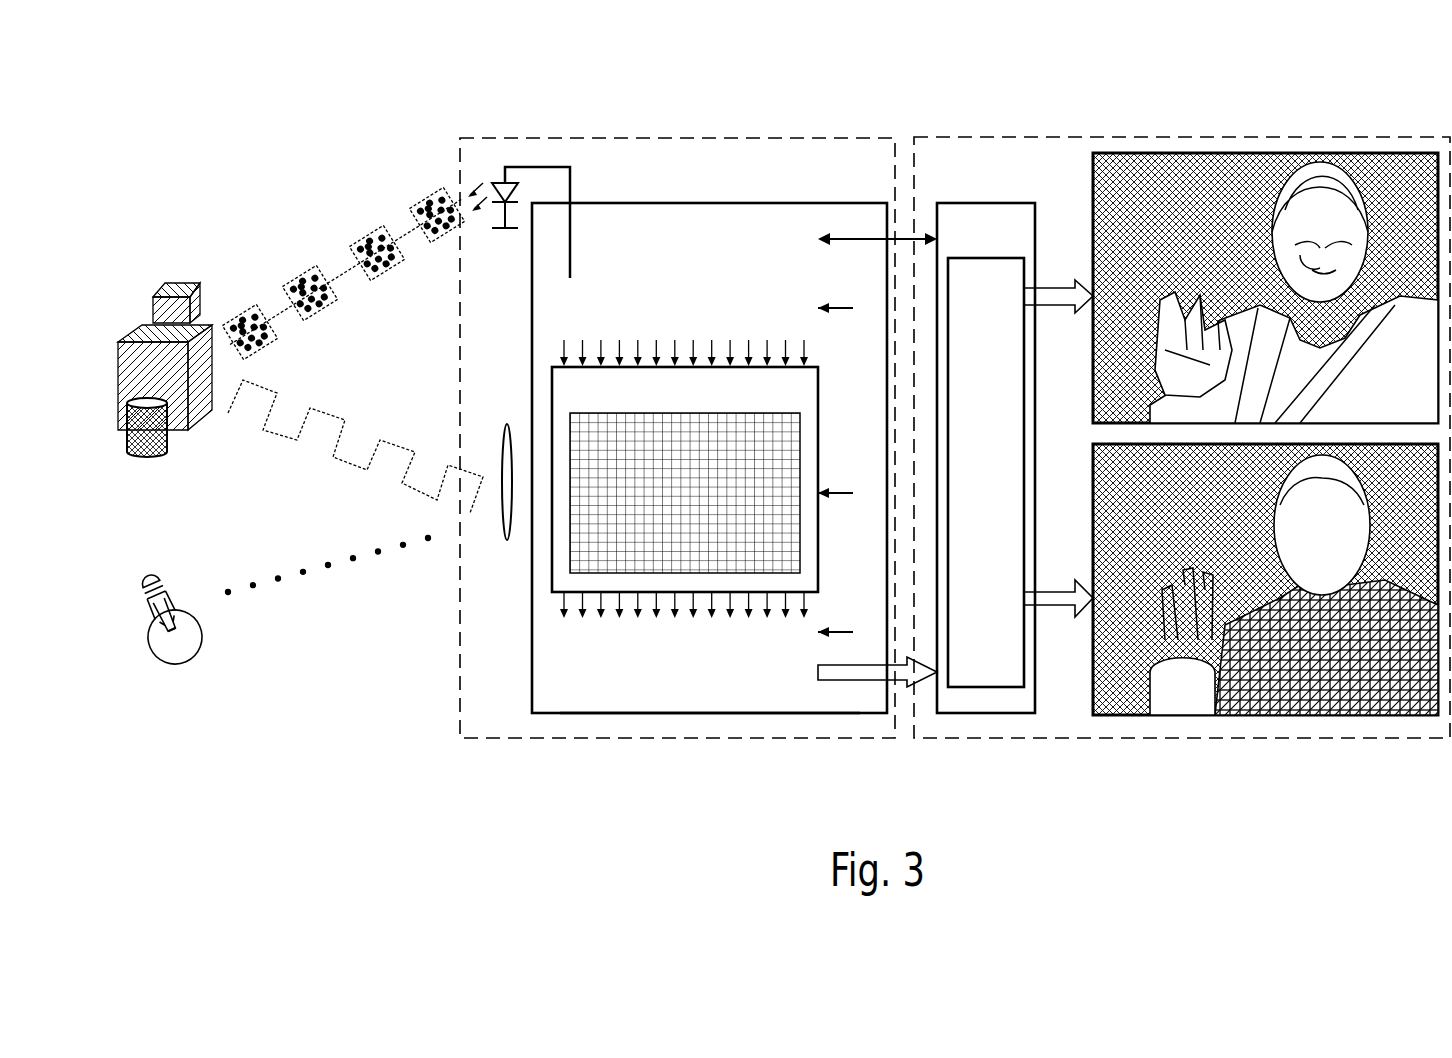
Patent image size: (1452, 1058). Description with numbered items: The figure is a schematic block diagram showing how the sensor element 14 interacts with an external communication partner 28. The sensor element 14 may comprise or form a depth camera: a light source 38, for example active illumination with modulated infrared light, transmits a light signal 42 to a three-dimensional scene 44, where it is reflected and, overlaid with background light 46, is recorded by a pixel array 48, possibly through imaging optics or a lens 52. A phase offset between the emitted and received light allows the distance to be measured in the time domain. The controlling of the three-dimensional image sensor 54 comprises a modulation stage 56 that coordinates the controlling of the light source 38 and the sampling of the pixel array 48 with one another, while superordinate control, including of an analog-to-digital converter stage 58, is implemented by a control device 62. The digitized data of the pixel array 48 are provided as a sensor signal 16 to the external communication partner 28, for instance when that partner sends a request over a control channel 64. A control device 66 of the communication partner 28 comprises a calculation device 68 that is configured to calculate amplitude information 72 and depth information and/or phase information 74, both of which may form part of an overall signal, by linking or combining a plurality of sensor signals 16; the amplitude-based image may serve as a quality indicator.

The sensor element 14 is at (690, 137).
The sensor signal 16 is at (855, 680).
The communication partner 28 is at (1057, 137).
The light source 38 is at (512, 148).
The light signal 42 is at (353, 228).
The three-dimensional scene 44 is at (134, 292).
The background light 46 is at (168, 693).
The pixel array 48 is at (552, 388).
The lens 52 is at (507, 540).
The 3D image sensor 54 is at (783, 203).
The modulation stage 56 is at (588, 277).
The analog-to-digital converter stage 58 is at (607, 705).
The control device 62 is at (835, 650).
The control channel 64 is at (873, 238).
The control device 66 is at (980, 203).
The calculation device 68 is at (985, 688).
The amplitude information 72 is at (1055, 287).
The depth information and/or phase information 74 is at (1055, 590).